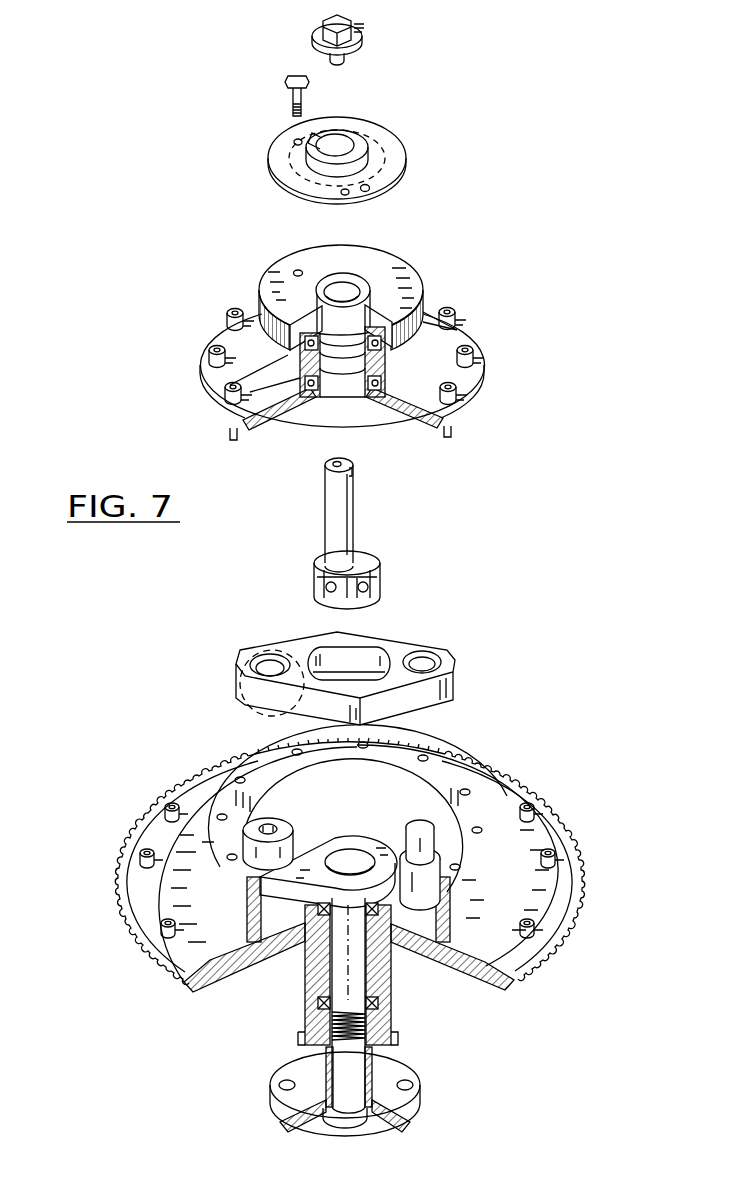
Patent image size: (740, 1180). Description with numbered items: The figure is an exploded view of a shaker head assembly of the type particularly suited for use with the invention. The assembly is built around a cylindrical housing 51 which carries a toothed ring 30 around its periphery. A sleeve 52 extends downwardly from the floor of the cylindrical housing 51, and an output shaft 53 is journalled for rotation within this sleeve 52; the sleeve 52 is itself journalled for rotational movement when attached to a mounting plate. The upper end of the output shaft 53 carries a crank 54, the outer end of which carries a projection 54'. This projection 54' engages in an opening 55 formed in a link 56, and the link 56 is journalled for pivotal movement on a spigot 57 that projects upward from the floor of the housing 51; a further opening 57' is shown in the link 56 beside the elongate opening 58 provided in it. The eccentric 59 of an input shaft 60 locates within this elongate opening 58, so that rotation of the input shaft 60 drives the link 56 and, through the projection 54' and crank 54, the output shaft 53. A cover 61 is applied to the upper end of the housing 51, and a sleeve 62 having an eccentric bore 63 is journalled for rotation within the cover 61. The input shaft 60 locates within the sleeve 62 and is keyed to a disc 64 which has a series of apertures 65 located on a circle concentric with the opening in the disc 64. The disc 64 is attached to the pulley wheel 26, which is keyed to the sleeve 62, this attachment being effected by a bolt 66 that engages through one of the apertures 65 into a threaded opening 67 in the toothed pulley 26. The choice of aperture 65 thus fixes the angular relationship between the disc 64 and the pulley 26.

The pulley wheel 26 is at (270, 288).
The toothed ring 30 is at (552, 833).
The cylindrical housing 51 is at (473, 887).
The sleeve 52 is at (393, 983).
The output shaft 53 is at (340, 975).
The crank 54 is at (328, 838).
The projection 54' is at (281, 819).
The opening 55 is at (271, 663).
The link 56 is at (437, 690).
The spigot 57 is at (455, 812).
The pin hole 57' is at (453, 637).
The elongate opening 58 is at (363, 653).
The eccentric 59 is at (365, 557).
The input shaft 60 is at (333, 520).
The cover 61 is at (467, 382).
The sleeve 62 is at (347, 373).
The eccentric bore 63 is at (343, 293).
The disc 64 is at (398, 173).
The apertures 65 is at (368, 191).
The bolt 66 is at (290, 110).
The threaded opening 67 is at (294, 271).